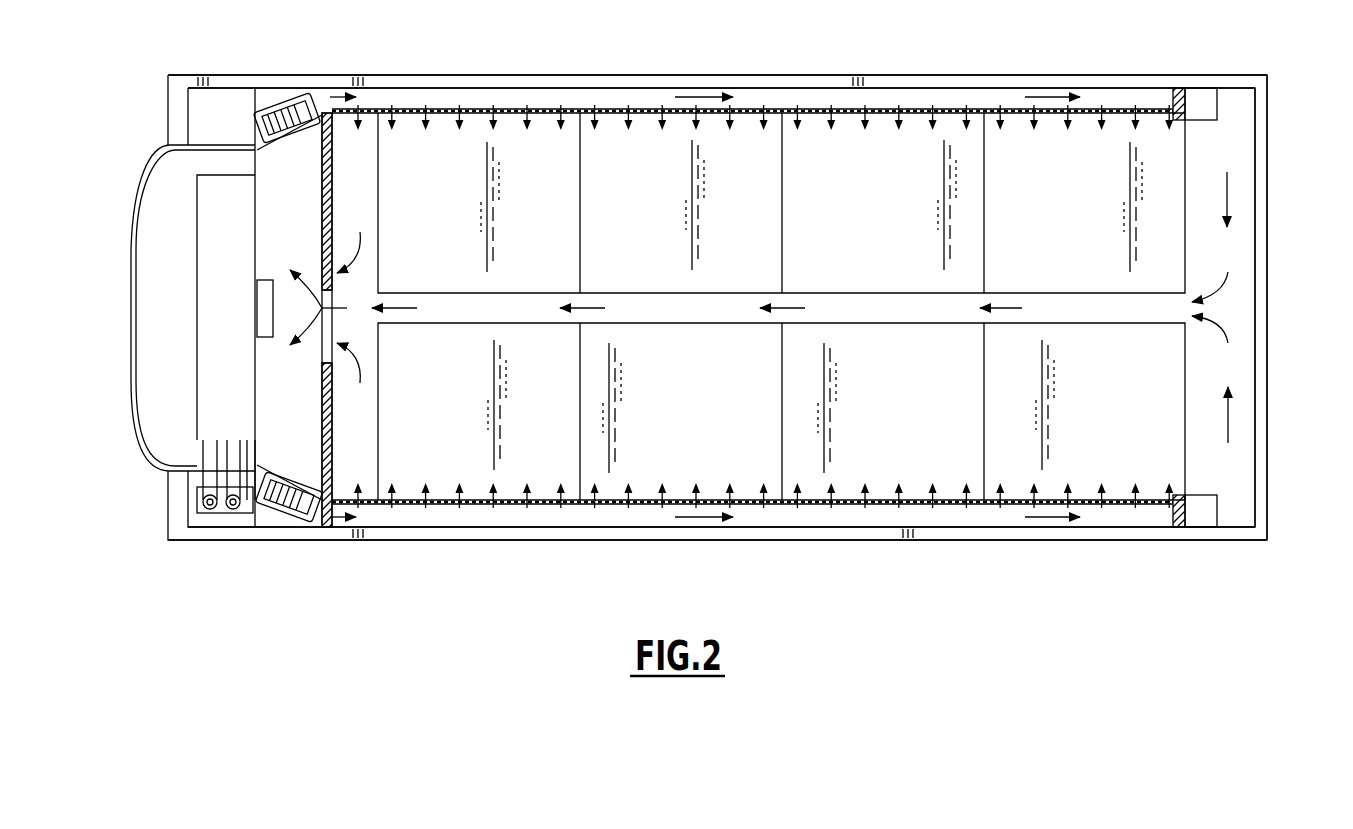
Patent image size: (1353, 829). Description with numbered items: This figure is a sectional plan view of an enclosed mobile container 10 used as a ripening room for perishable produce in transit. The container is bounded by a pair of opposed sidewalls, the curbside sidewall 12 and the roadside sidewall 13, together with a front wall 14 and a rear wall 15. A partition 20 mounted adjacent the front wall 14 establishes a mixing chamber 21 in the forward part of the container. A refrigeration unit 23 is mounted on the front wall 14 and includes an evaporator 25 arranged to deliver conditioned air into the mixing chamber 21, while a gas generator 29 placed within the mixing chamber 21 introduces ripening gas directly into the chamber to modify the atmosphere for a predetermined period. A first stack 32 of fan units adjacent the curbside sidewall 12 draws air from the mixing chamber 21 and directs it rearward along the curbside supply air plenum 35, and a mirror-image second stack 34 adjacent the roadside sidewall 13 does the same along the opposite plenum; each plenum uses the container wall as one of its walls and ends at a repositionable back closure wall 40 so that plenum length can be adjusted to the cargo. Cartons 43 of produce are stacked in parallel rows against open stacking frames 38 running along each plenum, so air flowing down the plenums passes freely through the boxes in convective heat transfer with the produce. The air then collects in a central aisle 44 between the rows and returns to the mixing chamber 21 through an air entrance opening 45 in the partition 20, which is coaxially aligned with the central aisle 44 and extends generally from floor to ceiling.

The enclosed mobile container 10 is at (892, 66).
The curbside sidewall 12 is at (640, 75).
The roadside sidewall 13 is at (537, 540).
The front wall 14 is at (250, 510).
The rear wall 15 is at (1264, 168).
The partition 20 is at (333, 202).
The mixing chamber 21 is at (310, 440).
The refrigeration unit 23 is at (143, 447).
The evaporator 25 is at (195, 240).
The gas generator 29 is at (248, 332).
The first stack of fan units 32 is at (272, 80).
The second stack of fan units 34 is at (290, 540).
The curbside supply air plenum 35 is at (1032, 82).
The open stacking frame 38 is at (1088, 113).
The back closure wall 40 is at (1217, 100).
The cartons 43 is at (811, 306).
The central aisle 44 is at (893, 310).
The air entrance opening 45 is at (325, 292).